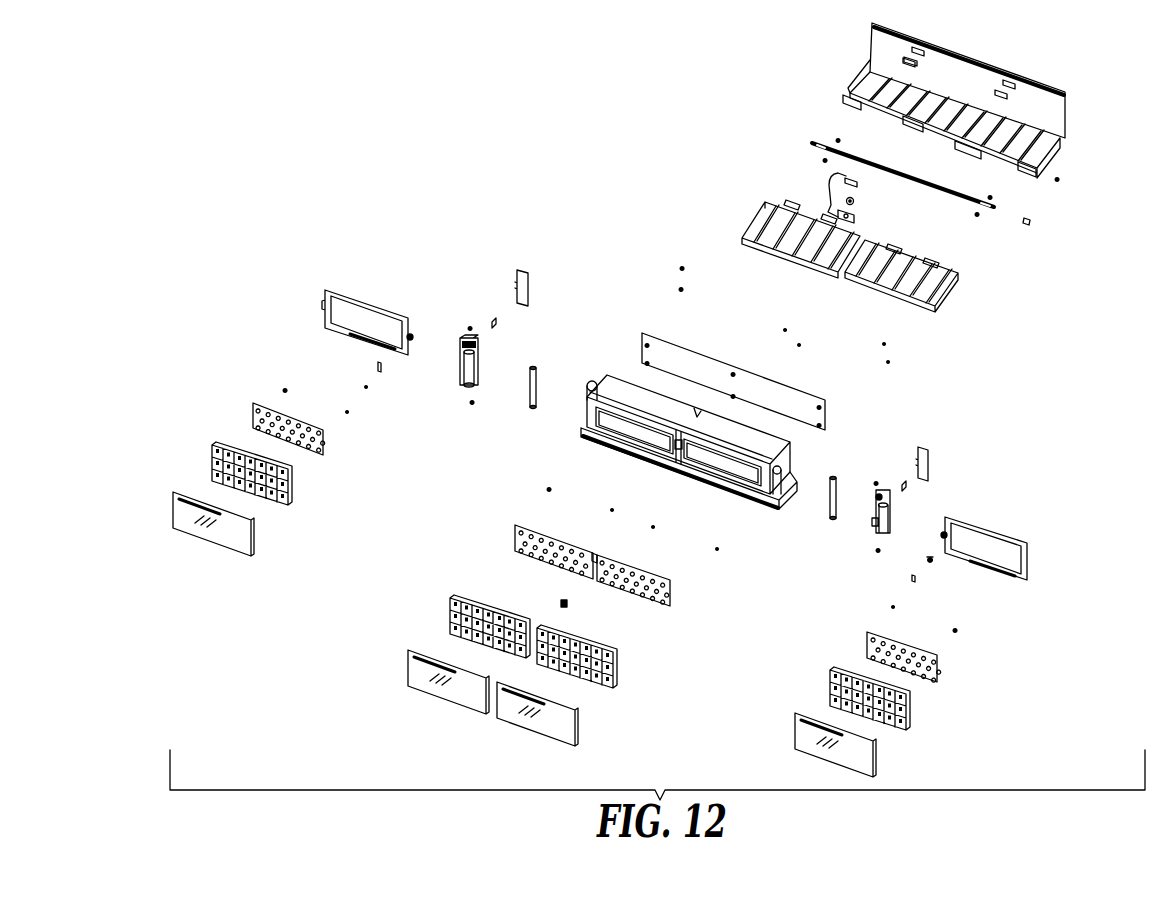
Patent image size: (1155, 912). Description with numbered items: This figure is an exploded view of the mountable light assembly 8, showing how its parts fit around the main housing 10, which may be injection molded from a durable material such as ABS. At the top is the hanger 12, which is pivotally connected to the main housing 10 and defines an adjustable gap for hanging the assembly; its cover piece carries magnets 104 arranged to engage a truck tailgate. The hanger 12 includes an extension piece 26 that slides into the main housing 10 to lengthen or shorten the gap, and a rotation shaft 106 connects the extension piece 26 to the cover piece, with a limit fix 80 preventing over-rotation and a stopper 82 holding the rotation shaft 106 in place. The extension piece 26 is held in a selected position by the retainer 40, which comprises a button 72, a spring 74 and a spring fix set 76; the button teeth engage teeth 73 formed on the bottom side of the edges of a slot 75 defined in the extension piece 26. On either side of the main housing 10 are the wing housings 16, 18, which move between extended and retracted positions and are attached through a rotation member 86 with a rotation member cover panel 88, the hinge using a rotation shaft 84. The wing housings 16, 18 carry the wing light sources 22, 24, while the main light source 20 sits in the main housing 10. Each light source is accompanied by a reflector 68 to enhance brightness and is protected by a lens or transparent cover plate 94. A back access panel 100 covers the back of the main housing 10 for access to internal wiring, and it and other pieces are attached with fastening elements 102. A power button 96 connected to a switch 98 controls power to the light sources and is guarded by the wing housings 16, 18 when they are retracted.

The mountable light assembly 8 is at (421, 166).
The main housing 10 is at (690, 482).
The hanger 12 is at (972, 55).
The wing housing 16 is at (990, 525).
The wing housing 18 is at (350, 290).
The main light source 20 is at (672, 598).
The wing light source 22 is at (867, 642).
The wing light source 24 is at (325, 440).
The extension piece 26 is at (935, 294).
The retainer 40 is at (830, 192).
The reflector 68 is at (290, 490).
The button 72 is at (843, 227).
The teeth 73 is at (833, 263).
The spring 74 is at (853, 202).
The slot 75 is at (842, 260).
The spring fix set 76 is at (853, 183).
The limit fix 80 is at (823, 158).
The stopper 82 is at (1033, 222).
The rotation shaft 84 is at (827, 498).
The rotation member 86 is at (478, 377).
The rotation member cover panel 88 is at (528, 293).
The transparent cover plate 94 is at (795, 723).
The power button 96 is at (568, 606).
The switch 98 is at (598, 560).
The back access panel 100 is at (762, 370).
The fastening elements 102 is at (1058, 178).
The magnets 104 is at (908, 62).
The rotation shaft 106 is at (818, 142).